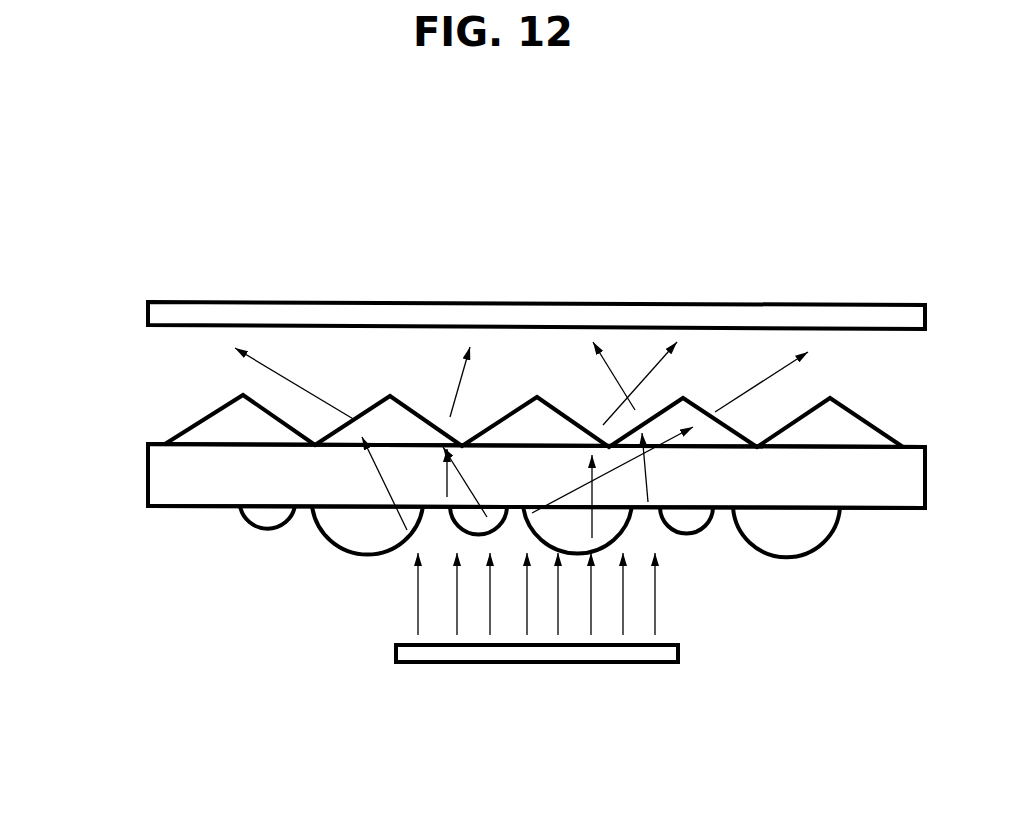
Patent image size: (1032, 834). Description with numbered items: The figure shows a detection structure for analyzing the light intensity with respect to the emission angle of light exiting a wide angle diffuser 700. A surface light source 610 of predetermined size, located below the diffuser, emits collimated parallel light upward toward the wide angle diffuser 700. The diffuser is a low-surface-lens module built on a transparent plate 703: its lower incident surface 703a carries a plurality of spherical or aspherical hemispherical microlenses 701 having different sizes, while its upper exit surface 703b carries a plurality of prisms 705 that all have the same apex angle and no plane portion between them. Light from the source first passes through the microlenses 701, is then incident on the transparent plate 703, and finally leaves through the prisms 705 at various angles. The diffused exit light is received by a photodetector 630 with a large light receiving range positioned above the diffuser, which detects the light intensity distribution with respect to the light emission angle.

The photodetector 630 is at (147, 311).
The wide angle diffuser 700 is at (118, 447).
The transparent plate 703 is at (160, 472).
The exit surface 703b is at (162, 443).
The incident surface 703a is at (177, 510).
The prisms 705 is at (217, 422).
The microlenses 701 is at (355, 530).
The surface light source 610 is at (440, 655).